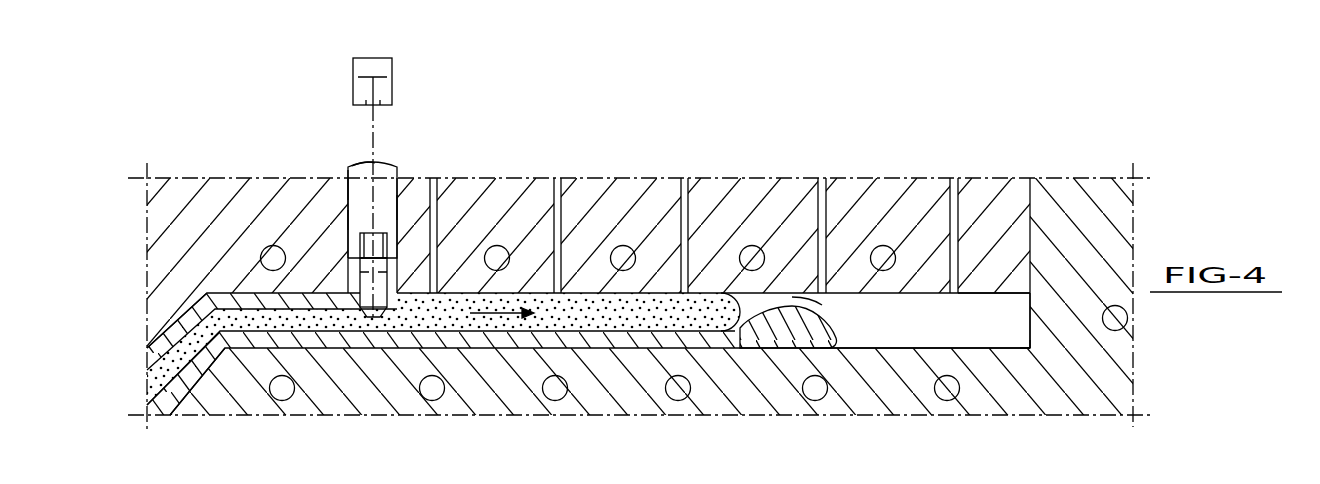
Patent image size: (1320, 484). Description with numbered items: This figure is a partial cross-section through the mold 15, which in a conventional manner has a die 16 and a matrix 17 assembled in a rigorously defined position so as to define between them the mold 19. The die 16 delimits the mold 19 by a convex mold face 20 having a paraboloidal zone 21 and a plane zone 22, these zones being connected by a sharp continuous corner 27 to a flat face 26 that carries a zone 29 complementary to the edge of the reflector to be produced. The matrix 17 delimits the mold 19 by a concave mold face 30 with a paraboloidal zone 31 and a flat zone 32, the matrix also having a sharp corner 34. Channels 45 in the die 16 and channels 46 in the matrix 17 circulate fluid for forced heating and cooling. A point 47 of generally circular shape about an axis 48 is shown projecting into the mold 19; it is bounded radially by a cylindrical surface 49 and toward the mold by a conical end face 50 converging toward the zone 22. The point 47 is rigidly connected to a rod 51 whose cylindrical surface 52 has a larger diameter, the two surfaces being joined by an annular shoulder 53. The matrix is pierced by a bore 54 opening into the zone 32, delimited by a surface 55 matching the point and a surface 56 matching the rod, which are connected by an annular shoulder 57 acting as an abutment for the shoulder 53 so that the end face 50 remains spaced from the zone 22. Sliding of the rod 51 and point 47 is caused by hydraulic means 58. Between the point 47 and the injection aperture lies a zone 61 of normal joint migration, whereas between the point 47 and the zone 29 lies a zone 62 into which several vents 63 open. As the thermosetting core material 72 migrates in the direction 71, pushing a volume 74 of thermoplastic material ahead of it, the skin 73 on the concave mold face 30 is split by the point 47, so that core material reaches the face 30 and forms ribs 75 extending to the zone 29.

The mold 15 is at (965, 156).
The die 16 is at (1062, 408).
The matrix 17 is at (880, 250).
The mold 19 is at (887, 340).
The convex mold face 20 is at (918, 327).
The zone 21 is at (175, 403).
The zone 22 is at (850, 337).
The flat face 26 is at (1017, 178).
The sharp continuous corner 27 is at (1030, 350).
The zone 29 is at (1028, 327).
The concave mold face 30 is at (973, 293).
The zone 31 is at (155, 345).
The zone 32 is at (863, 293).
The sharp corner 34 is at (1030, 295).
The channels 45 is at (560, 396).
The channels 46 is at (760, 250).
The point 47 is at (314, 337).
The axis 48 is at (376, 163).
The surface 49 is at (388, 277).
The end face 50 is at (372, 320).
The rod 51 is at (357, 164).
The surface 52 is at (347, 177).
The annular shoulder 53 is at (393, 258).
The bore 54 is at (392, 207).
The surface 55 is at (361, 268).
The surface 56 is at (347, 190).
The annular shoulder 57 is at (350, 218).
The hydraulic means 58 is at (407, 82).
The zone 61 is at (242, 343).
The zone 62 is at (721, 312).
The vents 63 is at (818, 210).
The direction 71 is at (488, 317).
The thermosetting core material 72 is at (421, 323).
The skin 73 is at (288, 297).
The volume 74 is at (792, 297).
The ribs 75 is at (580, 303).